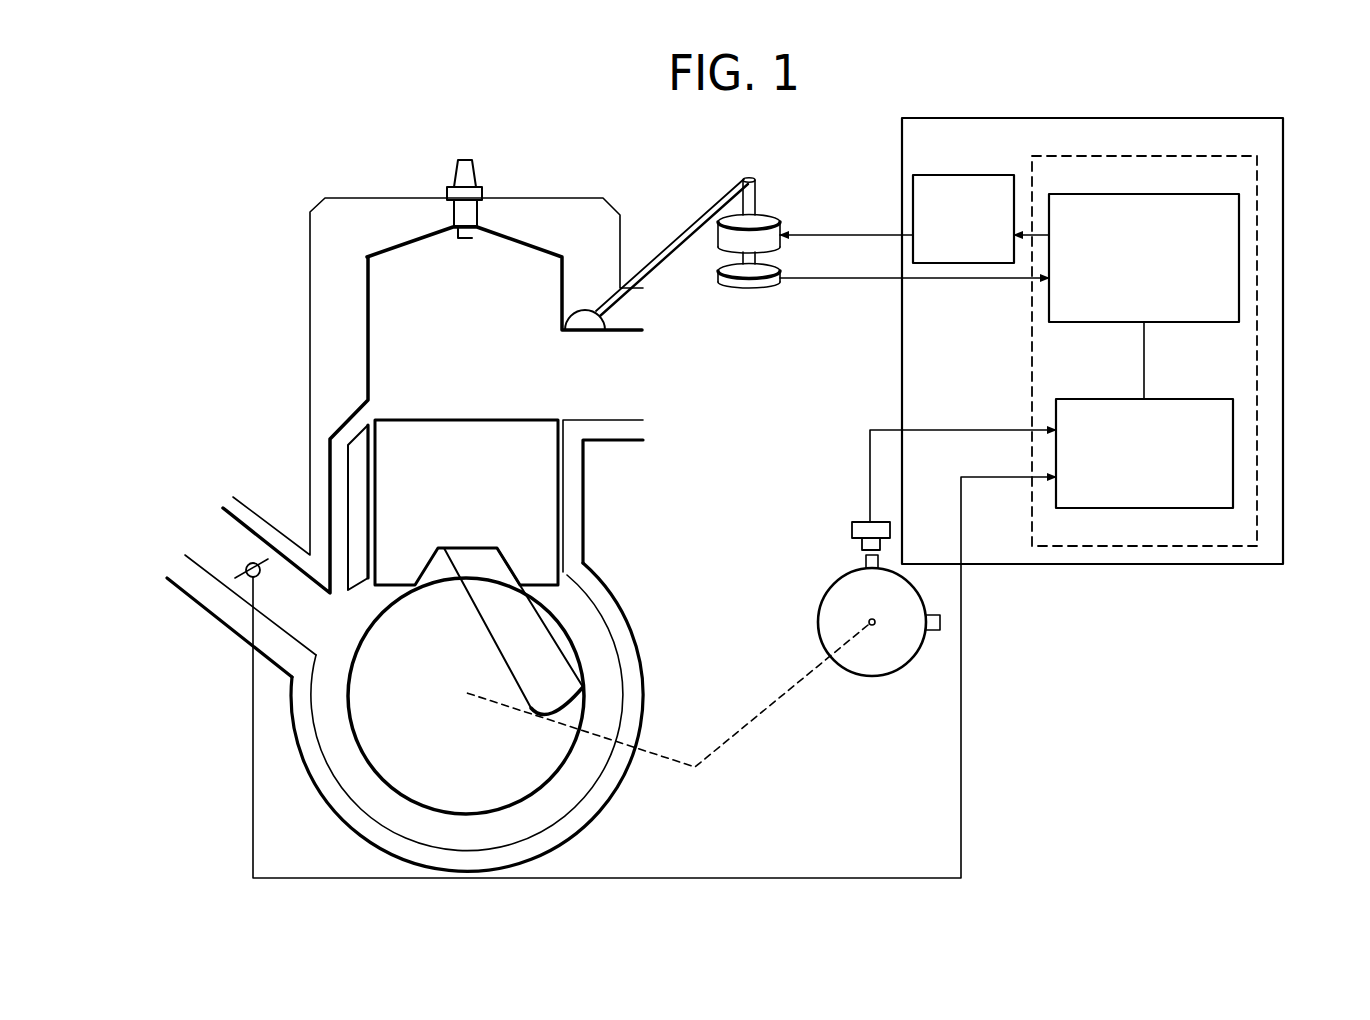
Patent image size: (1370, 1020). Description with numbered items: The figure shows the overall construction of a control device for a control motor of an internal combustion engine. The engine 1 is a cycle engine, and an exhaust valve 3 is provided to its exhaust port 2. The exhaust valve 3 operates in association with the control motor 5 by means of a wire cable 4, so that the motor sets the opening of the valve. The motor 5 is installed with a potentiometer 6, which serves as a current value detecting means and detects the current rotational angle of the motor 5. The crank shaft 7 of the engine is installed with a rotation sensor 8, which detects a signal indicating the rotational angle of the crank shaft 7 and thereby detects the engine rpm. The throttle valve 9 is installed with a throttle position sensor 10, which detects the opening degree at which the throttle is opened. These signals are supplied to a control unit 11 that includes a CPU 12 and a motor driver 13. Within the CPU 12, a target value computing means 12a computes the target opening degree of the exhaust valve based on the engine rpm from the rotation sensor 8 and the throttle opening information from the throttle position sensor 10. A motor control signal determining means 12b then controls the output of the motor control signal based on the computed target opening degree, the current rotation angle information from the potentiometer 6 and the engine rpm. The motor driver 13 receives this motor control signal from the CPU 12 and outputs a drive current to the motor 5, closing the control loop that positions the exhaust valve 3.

The engine 1 is at (309, 233).
The exhaust port 2 is at (565, 382).
The exhaust valve 3 is at (585, 314).
The wire cable 4 is at (680, 226).
The control motor 5 is at (765, 218).
The potentiometer 6 is at (765, 286).
The crank shaft 7 is at (866, 620).
The rotation sensor 8 is at (855, 521).
The throttle valve 9 is at (260, 572).
The throttle position sensor 10 is at (246, 564).
The control unit 11 is at (902, 150).
The CPU 12 is at (1257, 165).
The target value computing means 12a is at (1233, 455).
The motor control signal determining means 12b is at (1239, 267).
The motor driver 13 is at (913, 205).